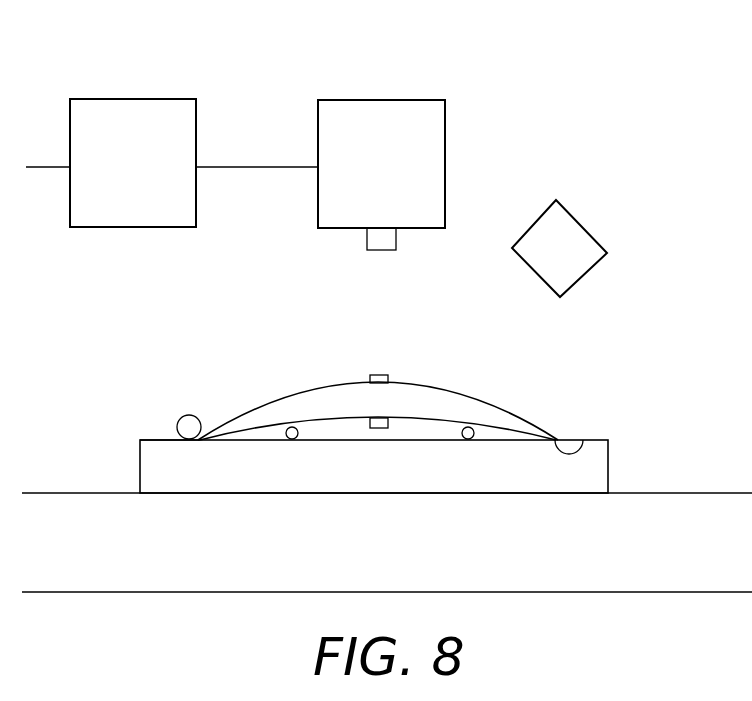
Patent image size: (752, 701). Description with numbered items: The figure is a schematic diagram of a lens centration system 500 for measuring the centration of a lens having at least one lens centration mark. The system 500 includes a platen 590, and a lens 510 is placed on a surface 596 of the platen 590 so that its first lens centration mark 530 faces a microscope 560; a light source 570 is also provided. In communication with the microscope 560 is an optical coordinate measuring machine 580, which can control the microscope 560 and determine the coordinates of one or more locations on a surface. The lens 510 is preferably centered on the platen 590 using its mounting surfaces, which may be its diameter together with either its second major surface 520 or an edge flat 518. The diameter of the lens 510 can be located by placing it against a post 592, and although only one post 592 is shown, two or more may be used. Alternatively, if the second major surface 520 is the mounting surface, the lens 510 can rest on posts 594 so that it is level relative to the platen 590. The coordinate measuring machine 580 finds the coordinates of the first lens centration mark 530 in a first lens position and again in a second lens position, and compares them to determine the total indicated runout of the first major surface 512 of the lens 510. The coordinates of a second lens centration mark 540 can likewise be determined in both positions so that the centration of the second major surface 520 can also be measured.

The lens centration system 500 is at (601, 83).
The lens 510 is at (246, 384).
The first major surface 512 is at (306, 388).
The edge flat 518 is at (583, 440).
The second major surface 520 is at (498, 440).
The first lens centration mark 530 is at (386, 375).
The second lens centration mark 540 is at (390, 424).
The microscope 560 is at (430, 137).
The light source 570 is at (568, 238).
The optical coordinate measuring machine 580 is at (130, 97).
The platen 590 is at (624, 476).
The post 592 is at (178, 418).
The posts 594 is at (468, 440).
The surface 596 is at (152, 439).